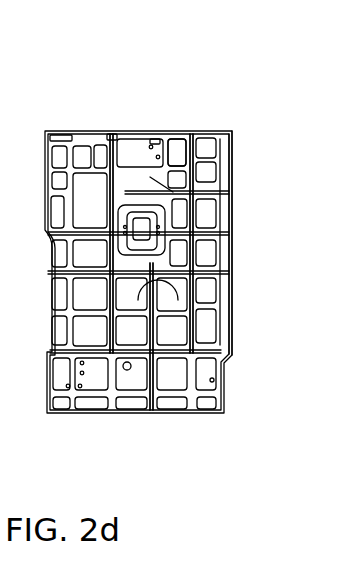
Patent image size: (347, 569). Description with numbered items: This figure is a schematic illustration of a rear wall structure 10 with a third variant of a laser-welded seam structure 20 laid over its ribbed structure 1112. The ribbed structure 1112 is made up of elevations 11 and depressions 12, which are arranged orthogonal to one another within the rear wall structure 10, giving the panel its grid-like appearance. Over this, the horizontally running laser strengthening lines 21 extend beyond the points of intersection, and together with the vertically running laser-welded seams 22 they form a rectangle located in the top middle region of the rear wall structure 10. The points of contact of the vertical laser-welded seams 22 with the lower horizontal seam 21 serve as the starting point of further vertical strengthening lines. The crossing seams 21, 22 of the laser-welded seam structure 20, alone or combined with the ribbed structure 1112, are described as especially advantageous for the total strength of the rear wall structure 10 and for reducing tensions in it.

The rear wall structure 10 is at (156, 88).
The elevations 11 is at (203, 373).
The depressions 12 is at (191, 311).
The laser-welded seam structure 20 is at (114, 186).
The horizontally running laser strengthening lines 21 is at (222, 233).
The vertically running laser-welded seams 22 is at (112, 207).
The ribbed structure 1112 is at (196, 146).